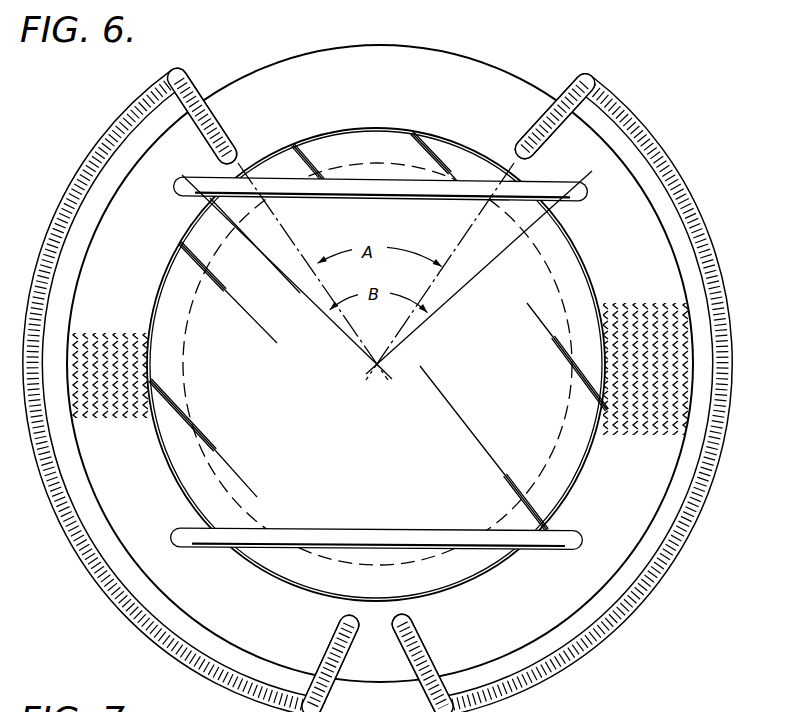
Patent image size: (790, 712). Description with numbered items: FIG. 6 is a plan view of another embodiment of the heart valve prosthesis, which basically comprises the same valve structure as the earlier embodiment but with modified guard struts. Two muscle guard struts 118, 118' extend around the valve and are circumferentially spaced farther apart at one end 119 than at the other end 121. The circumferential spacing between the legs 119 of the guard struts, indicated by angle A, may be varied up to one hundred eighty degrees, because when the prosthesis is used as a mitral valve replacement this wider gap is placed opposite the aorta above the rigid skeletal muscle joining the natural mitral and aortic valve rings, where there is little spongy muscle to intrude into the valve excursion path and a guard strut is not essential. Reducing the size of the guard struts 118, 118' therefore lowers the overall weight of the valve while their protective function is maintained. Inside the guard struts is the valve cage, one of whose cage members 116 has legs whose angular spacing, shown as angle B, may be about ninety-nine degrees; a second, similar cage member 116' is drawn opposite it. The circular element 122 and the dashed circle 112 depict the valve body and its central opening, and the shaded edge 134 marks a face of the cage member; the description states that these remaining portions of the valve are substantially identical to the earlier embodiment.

The circle of the field of view 112 is at (185, 371).
The valve cage member 116 is at (380, 216).
The lower transverse bar 116' is at (376, 512).
The muscle guard strut 118 is at (176, 392).
The muscle guard strut 118' is at (562, 395).
The leg of guard strut 119 is at (229, 114).
The other end of guard struts 121 is at (408, 659).
The lens 122 is at (577, 468).
The edge of transverse bar 134 is at (308, 193).